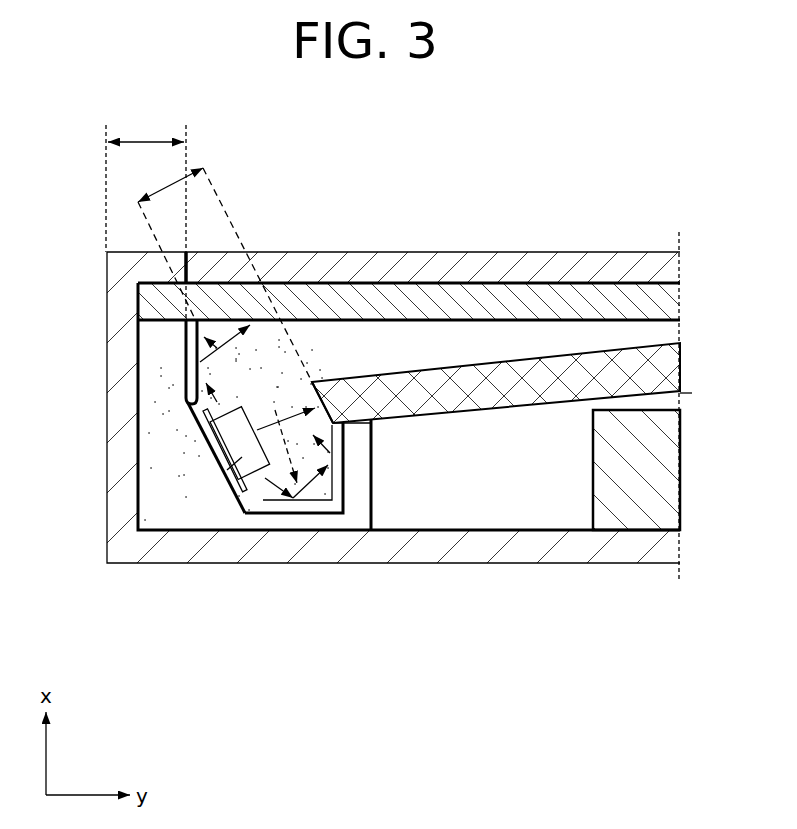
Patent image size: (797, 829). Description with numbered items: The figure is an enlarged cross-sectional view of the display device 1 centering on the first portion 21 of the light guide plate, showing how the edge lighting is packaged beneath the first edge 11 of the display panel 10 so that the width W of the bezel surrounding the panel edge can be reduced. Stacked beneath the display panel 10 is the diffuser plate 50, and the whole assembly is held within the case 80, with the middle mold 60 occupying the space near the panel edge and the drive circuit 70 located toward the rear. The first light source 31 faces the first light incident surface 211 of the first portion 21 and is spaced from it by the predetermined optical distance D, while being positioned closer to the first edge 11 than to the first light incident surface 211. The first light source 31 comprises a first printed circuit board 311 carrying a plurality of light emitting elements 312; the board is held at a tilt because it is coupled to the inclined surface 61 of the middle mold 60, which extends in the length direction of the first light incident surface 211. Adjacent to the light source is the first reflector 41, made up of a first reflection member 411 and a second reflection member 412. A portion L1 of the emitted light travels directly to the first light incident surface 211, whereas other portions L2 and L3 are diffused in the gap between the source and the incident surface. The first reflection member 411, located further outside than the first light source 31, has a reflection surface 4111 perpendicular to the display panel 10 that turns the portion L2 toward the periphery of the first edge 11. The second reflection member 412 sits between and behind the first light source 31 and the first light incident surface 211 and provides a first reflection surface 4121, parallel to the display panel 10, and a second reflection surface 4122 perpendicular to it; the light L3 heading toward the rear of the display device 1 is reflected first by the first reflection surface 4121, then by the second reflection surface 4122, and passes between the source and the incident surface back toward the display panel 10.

The display device 1 is at (387, 136).
The display panel 10 is at (679, 263).
The first edge 11 is at (183, 273).
The first portion 21 is at (679, 368).
The first light incident surface 211 is at (311, 384).
The first light source 31 is at (188, 532).
The first printed circuit board 311 is at (215, 453).
The light emitting elements 312 is at (240, 479).
The first reflector 41 is at (204, 397).
The first reflection member 411 is at (159, 292).
The reflection surface 4111 is at (195, 322).
The second reflection member 412 is at (281, 421).
The first reflection surface 4121 is at (245, 505).
The second reflection surface 4122 is at (305, 514).
The diffuser plate 50 is at (679, 300).
The middle mold 60 is at (157, 486).
The inclined surface 61 is at (200, 410).
The drive circuit 70 is at (679, 463).
The case 80 is at (118, 333).
The portion of the light L1 is at (205, 429).
The portion of the light L2 is at (212, 400).
The light L3 is at (267, 478).
The width of a bezel W is at (146, 215).
The optical distance D is at (225, 271).